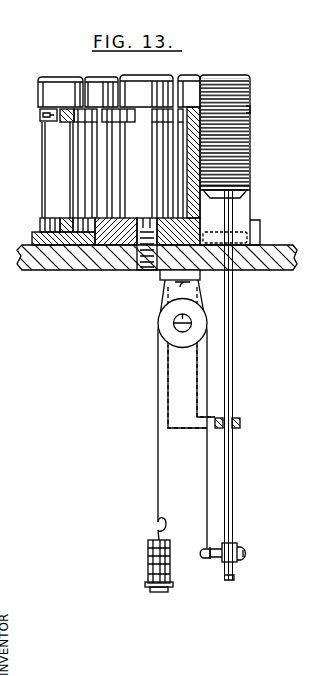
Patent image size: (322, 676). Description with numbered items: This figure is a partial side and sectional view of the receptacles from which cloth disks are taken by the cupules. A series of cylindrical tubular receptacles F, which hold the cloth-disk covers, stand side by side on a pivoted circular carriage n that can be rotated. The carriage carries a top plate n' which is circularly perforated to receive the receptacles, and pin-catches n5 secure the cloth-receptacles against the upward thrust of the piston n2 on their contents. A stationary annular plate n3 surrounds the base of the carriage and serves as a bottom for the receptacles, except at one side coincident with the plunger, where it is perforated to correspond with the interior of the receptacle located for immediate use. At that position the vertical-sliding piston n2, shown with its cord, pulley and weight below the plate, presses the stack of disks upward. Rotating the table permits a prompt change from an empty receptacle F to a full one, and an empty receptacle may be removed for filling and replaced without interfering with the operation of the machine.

The pin-catch n5 is at (41, 111).
The top plate n' is at (164, 107).
The piston n2 is at (225, 385).
The stationary annular plate n3 is at (267, 226).
The pivoted circular carriage n is at (116, 244).
The receptacle F is at (148, 153).